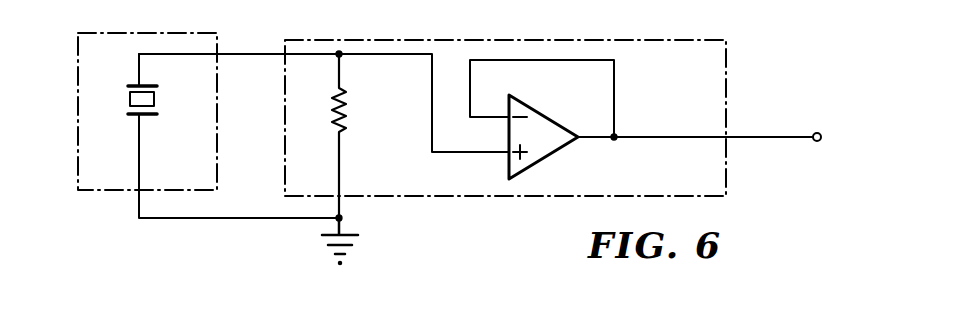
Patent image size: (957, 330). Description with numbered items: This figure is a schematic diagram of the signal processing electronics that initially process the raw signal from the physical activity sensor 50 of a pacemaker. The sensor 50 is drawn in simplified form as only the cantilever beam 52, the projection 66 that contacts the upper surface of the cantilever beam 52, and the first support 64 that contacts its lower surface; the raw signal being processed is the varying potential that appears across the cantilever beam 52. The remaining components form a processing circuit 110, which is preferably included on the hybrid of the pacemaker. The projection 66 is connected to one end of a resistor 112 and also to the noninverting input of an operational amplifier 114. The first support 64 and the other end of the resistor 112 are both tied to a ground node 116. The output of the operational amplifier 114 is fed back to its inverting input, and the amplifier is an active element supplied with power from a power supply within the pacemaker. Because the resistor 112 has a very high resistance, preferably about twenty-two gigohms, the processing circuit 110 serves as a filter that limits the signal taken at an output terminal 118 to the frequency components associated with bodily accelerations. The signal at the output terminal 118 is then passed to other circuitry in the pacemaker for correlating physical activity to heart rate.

The physical activity sensor 50 is at (112, 33).
The cantilever beam 52 is at (154, 99).
The first support 64 is at (133, 116).
The projection 66 is at (136, 86).
The processing circuit 110 is at (662, 40).
The resistor 112 is at (344, 92).
The operational amplifier 114 is at (538, 114).
The ground node 116 is at (352, 226).
The output terminal 118 is at (830, 110).